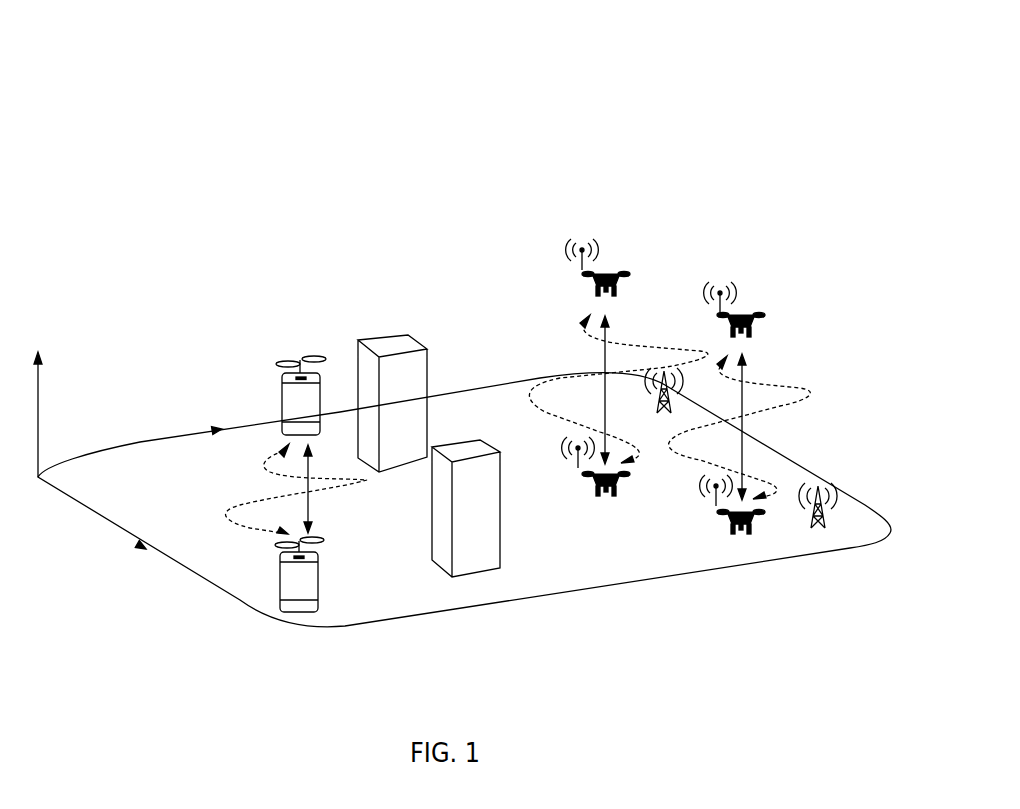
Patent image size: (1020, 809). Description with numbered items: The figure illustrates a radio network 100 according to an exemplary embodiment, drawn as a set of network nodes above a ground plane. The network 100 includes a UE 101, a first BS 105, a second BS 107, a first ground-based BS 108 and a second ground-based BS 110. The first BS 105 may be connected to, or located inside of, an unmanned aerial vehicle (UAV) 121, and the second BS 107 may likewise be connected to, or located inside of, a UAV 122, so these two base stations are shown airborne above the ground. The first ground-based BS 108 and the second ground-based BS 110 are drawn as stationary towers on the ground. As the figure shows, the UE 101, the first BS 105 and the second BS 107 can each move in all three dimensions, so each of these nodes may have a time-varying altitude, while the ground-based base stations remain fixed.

The network 100 is at (198, 88).
The UE 101 is at (281, 413).
The first BS 105 is at (581, 243).
The second BS 107 is at (717, 282).
The first ground-based BS 108 is at (687, 378).
The second ground-based BS 110 is at (833, 532).
The unmanned aerial vehicle (UAV) 121 is at (610, 272).
The UAV 122 is at (737, 316).